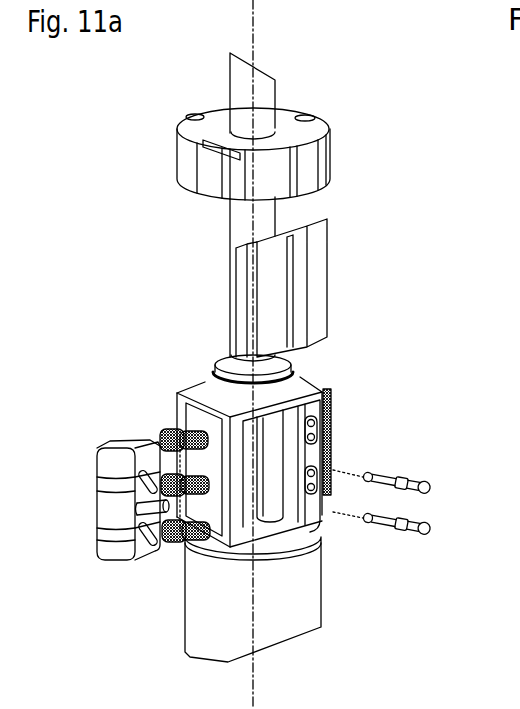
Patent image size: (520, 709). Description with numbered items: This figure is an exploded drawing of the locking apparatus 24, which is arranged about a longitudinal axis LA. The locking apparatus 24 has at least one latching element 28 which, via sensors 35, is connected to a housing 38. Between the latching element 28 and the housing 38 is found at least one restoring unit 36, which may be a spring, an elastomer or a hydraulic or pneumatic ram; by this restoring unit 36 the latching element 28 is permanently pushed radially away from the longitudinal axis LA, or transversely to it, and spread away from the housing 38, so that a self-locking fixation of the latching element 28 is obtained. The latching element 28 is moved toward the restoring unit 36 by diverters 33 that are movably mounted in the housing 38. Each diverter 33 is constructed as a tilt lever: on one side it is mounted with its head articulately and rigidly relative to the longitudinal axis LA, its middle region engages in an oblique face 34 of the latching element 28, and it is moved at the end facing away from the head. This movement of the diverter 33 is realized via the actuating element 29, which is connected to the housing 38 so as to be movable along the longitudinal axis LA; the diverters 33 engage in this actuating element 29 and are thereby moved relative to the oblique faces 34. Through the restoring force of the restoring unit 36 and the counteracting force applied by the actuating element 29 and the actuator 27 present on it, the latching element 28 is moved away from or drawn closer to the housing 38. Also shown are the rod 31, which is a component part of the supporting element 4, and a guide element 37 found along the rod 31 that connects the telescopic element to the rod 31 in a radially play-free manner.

The longitudinal axis LA is at (255, 33).
The locking apparatus 24 is at (118, 292).
The actuator 27 is at (295, 383).
The latching element 28 is at (77, 483).
The actuating element 29 is at (317, 291).
The rod 31 is at (262, 225).
The diverter 33 is at (427, 525).
The oblique face 34 is at (135, 533).
The sensors 35 is at (305, 518).
The restoring unit 36 is at (162, 477).
The guide element 37 is at (293, 133).
The housing 38 is at (312, 404).
The supporting element 4 is at (295, 595).